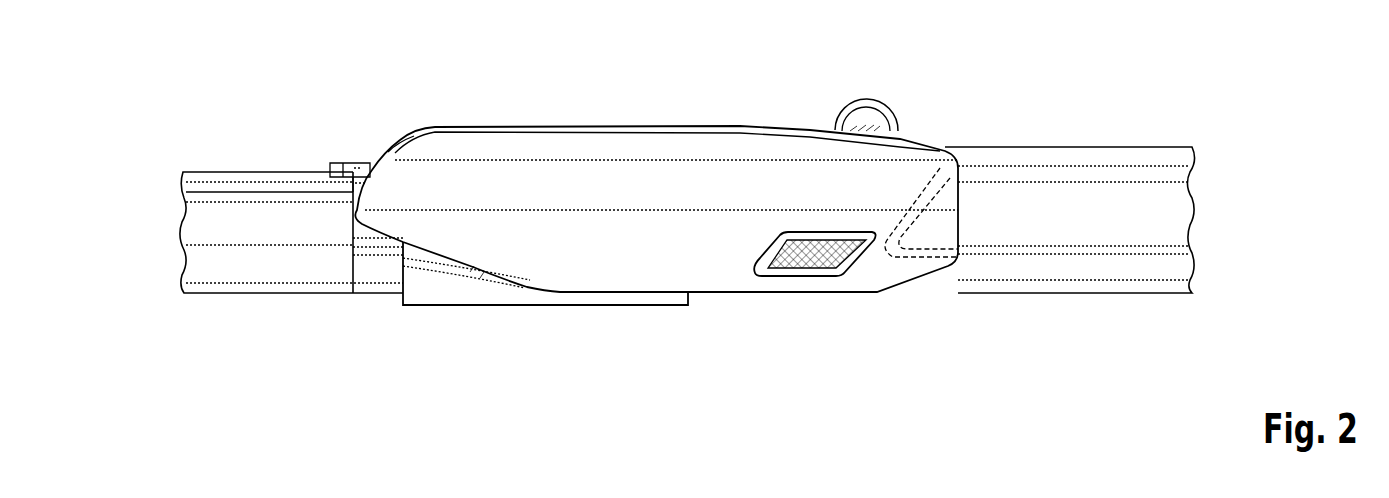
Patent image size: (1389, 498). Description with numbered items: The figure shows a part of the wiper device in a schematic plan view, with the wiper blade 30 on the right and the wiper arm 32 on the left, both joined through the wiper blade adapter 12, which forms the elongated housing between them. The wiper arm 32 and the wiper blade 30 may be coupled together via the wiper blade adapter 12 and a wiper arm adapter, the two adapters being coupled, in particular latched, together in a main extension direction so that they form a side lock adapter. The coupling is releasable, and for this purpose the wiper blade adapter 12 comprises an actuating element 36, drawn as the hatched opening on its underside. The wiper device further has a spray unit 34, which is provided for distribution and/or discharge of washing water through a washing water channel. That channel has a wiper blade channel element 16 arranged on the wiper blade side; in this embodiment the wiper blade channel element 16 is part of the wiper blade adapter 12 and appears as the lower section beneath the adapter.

The wiper blade adapter 12 is at (647, 127).
The wiper blade channel element 16 is at (420, 291).
The wiper blade 30 is at (1073, 127).
The wiper arm 32 is at (176, 313).
The spray unit 34 is at (378, 125).
The actuating element 36 is at (815, 263).